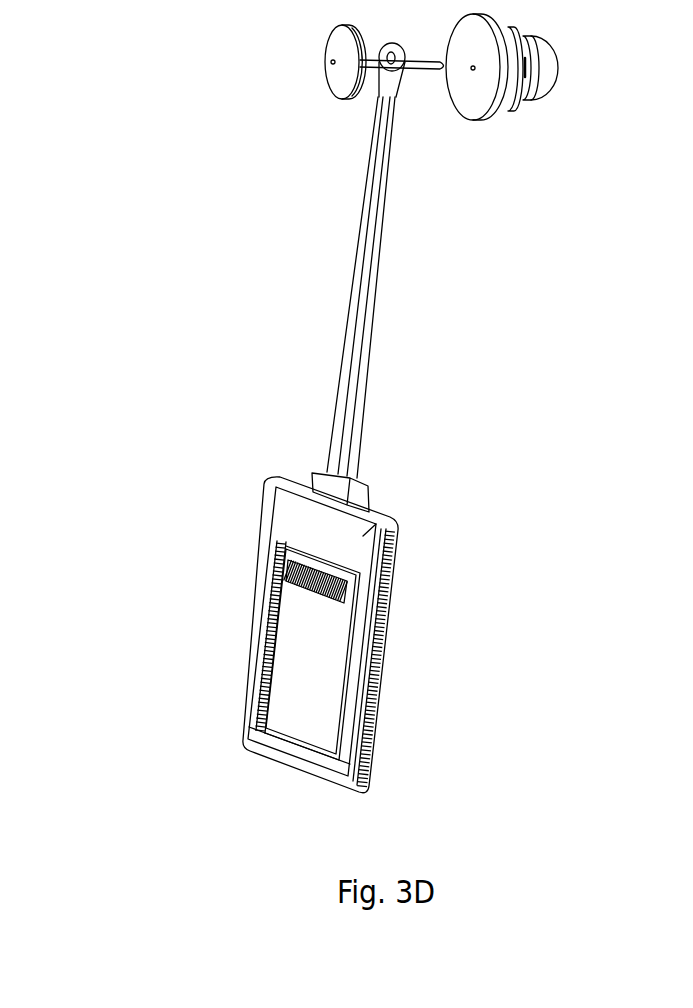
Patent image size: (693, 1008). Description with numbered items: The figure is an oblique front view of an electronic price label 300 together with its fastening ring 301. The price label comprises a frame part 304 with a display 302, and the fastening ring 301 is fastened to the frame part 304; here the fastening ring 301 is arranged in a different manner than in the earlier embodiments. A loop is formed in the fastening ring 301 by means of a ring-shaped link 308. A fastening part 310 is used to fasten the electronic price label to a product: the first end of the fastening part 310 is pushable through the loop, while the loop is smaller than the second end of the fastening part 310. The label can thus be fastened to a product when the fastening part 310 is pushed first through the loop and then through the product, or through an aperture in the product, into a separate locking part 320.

The device assembly 300 is at (155, 100).
The fastening ring 301 is at (353, 307).
The display 302 is at (285, 698).
The frame part 304 is at (302, 538).
The ring-shaped link 308 is at (389, 100).
The fastening part 310 is at (340, 77).
The locking part 320 is at (543, 70).